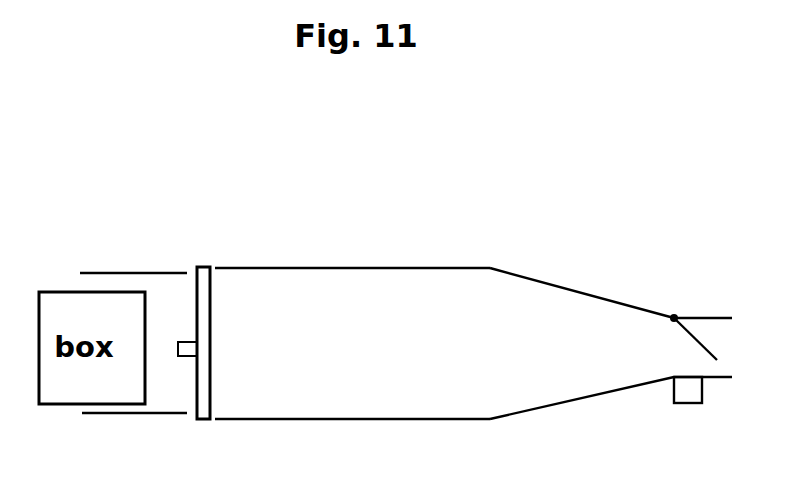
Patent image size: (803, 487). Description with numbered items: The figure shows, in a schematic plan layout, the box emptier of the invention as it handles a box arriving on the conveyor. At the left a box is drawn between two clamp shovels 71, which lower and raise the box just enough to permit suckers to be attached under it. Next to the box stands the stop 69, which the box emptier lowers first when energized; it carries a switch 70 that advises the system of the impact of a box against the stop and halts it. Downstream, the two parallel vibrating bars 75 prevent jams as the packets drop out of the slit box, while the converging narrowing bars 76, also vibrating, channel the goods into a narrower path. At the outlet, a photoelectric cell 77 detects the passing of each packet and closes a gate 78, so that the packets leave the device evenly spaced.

The stop 69 is at (210, 367).
The switch 70 is at (177, 331).
The clamp shovels 71 is at (133, 348).
The vibrating bars 75 is at (352, 343).
The narrowing bars 76 is at (582, 346).
The photoelectric cell 77 is at (699, 410).
The gate 78 is at (715, 342).